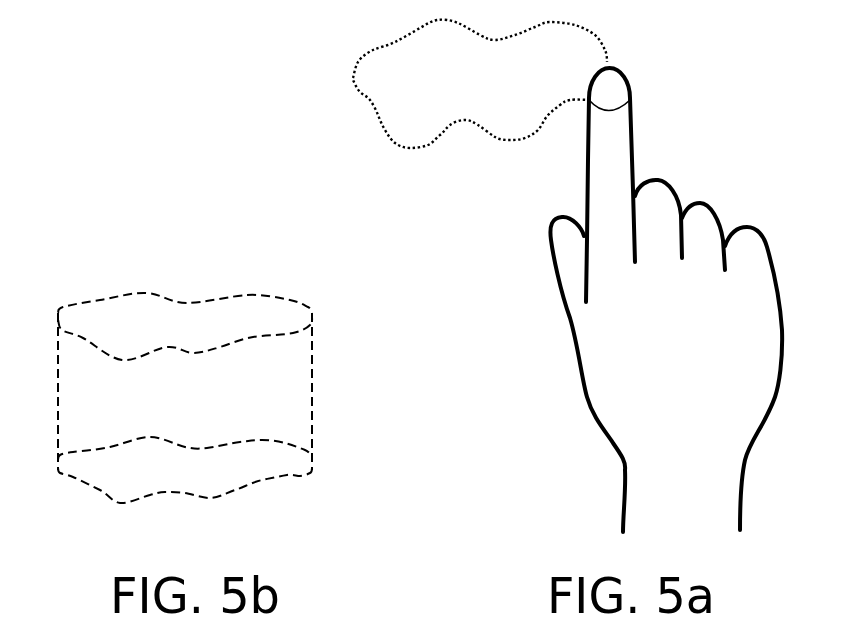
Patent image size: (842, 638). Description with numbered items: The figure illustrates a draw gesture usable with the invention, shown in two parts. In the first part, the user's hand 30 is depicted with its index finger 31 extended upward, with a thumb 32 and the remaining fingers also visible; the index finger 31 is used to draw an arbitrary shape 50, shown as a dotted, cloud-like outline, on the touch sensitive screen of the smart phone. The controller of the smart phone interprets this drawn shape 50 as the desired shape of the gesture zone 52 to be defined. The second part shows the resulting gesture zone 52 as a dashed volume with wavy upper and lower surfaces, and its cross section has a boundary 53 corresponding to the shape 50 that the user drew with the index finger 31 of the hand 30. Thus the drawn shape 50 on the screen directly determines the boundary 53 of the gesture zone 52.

In FIG. 5A, the hand 30 is at (635, 300).
In FIG. 5A, the index finger 31 is at (632, 122).
In FIG. 5A, the thumb 32 is at (555, 263).
In FIG. 5A, the arbitrary shape 50 is at (353, 78).
In FIG. 5B, the gesture zone 52 is at (223, 360).
In FIG. 5B, the boundary 53 is at (148, 292).